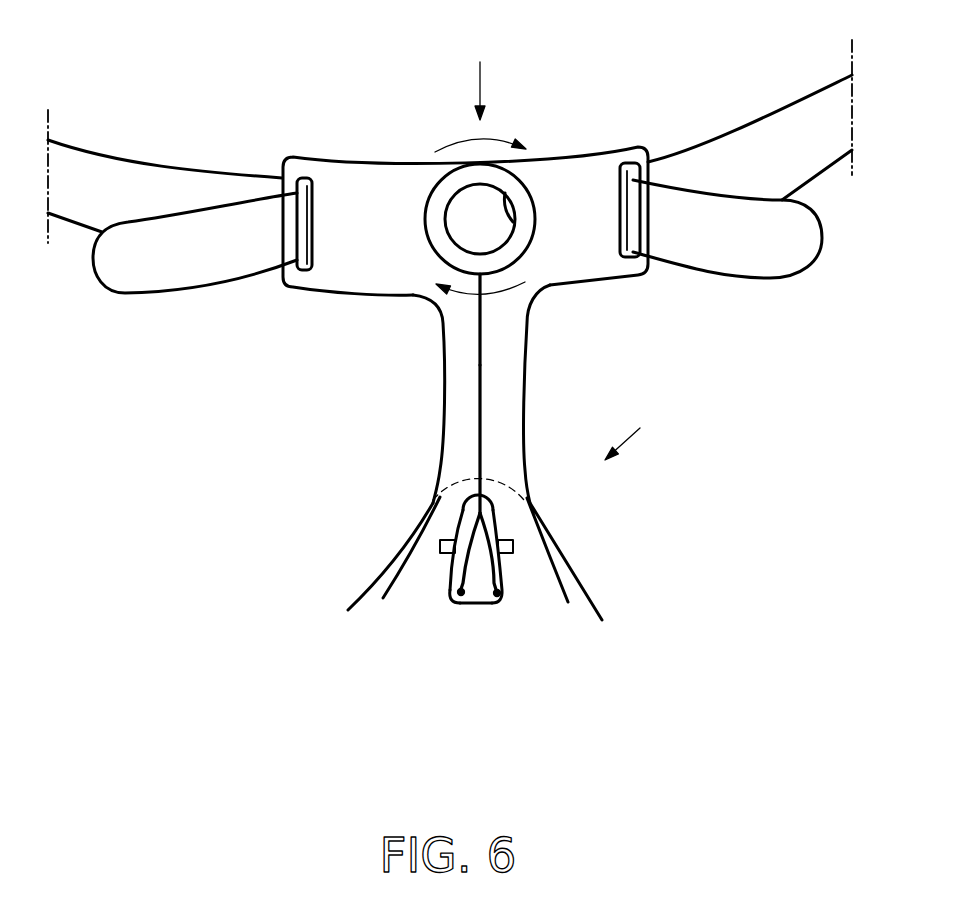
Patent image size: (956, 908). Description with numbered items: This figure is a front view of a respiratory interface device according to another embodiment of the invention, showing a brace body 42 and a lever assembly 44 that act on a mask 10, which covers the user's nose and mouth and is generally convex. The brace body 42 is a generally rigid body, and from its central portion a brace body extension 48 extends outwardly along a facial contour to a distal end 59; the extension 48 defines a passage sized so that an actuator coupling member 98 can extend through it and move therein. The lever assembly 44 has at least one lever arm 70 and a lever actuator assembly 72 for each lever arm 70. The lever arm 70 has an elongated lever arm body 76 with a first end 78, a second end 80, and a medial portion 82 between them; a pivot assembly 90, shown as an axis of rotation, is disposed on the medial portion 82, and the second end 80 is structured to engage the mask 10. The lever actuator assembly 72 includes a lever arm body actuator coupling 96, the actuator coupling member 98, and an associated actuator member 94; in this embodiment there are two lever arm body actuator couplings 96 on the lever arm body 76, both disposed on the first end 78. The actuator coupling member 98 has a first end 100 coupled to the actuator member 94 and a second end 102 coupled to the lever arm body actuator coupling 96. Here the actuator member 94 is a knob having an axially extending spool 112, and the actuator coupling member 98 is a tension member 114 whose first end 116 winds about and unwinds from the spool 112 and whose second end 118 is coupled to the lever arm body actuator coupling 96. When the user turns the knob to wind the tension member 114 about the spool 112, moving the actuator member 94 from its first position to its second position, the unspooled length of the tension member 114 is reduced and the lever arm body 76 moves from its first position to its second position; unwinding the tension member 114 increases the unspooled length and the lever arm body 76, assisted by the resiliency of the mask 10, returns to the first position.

The mask 10 is at (563, 567).
The brace body 42 is at (423, 548).
The lever assembly 44 is at (551, 456).
The brace body extension 48 is at (523, 407).
The distal end 59 is at (383, 170).
The lever arm 70 is at (445, 604).
The lever actuator assembly 72 is at (480, 92).
The lever arm body 76 is at (503, 600).
The first end 78 is at (478, 605).
The second end 80 is at (485, 510).
The medial portion 82 is at (445, 567).
The pivot assembly 90 is at (513, 547).
The actuator member 94 is at (505, 193).
The lever arm body actuator coupling 96 is at (466, 598).
The actuator coupling member 98 is at (482, 347).
The first end 100 is at (535, 200).
The second end 102 is at (473, 605).
The spool 112 is at (513, 222).
The tension member 114 is at (482, 382).
The first end 116 is at (477, 283).
The second end 118 is at (488, 568).